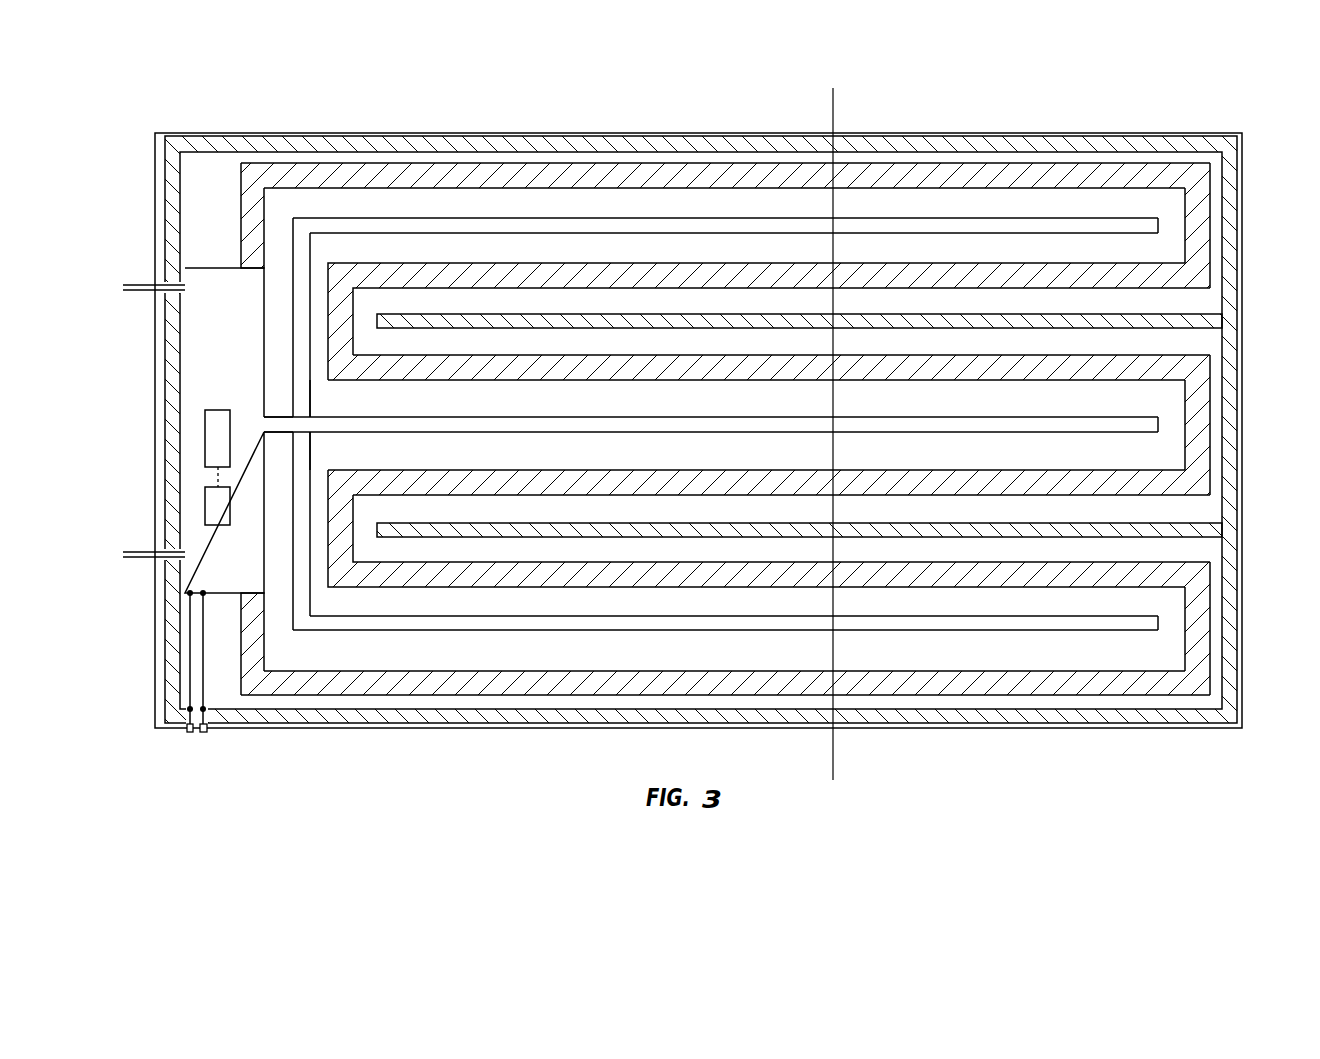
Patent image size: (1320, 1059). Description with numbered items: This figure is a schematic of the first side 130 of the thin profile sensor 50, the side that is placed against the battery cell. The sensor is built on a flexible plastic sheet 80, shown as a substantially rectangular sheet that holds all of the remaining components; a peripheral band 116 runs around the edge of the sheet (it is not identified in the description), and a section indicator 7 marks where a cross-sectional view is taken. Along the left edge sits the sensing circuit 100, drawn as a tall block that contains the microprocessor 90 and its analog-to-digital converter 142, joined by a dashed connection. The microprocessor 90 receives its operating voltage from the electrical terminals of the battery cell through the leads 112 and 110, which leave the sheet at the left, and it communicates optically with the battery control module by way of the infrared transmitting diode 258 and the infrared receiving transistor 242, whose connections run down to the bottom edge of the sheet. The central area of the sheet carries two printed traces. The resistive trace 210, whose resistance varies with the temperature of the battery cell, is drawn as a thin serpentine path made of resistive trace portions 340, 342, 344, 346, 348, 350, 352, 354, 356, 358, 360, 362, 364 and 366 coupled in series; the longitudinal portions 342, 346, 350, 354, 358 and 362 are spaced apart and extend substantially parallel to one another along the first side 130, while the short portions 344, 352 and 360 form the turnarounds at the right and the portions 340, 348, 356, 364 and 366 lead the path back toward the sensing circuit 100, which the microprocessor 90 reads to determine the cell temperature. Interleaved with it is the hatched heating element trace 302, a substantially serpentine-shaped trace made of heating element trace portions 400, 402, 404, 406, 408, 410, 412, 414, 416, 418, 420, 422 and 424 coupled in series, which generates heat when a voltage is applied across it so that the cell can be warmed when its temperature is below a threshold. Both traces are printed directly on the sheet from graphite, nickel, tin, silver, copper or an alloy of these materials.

The thin profile sensor 50 is at (697, 117).
The section line for FIG. 7 is at (866, 83).
The flexible plastic sheet 80 is at (907, 133).
The housing insulating wall 116 is at (1150, 716).
The sensing circuit 100 is at (192, 358).
The microprocessor 90 is at (207, 430).
The analog-to-digital converter 142 is at (207, 500).
The lead 112 is at (140, 287).
The lead 110 is at (140, 556).
The infrared transmitting diode 258 is at (190, 736).
The infrared receiving transistor 242 is at (204, 735).
The heating element trace portion 422 is at (760, 193).
The heating element trace portion 424 is at (250, 206).
The heating element trace portion 420 is at (1185, 200).
The heating element trace portion 416 is at (353, 306).
The heating element trace portion 418 is at (722, 295).
The heating element trace portion 414 is at (788, 388).
The heating element trace portion 412 is at (1185, 397).
The heating element trace portion 410 is at (745, 462).
The heating element trace portion 408 is at (355, 540).
The heating element trace portion 406 is at (848, 595).
The heating element trace portion 404 is at (1185, 598).
The heating element trace portion 402 is at (560, 670).
The heating element trace portion 400 is at (264, 638).
The heating element trace 302 is at (1170, 278).
The resistive trace portion 364 is at (293, 265).
The resistive trace portion 340 is at (268, 443).
The resistive trace portion 366 is at (266, 420).
The resistive trace portion 356 is at (310, 391).
The resistive trace portion 348 is at (310, 441).
The resistive trace portion 362 is at (640, 218).
The resistive trace portion 358 is at (580, 235).
The resistive trace portion 360 is at (1150, 228).
The resistive trace portion 354 is at (692, 410).
The resistive trace portion 350 is at (617, 437).
The resistive trace portion 352 is at (1150, 426).
The resistive trace portion 346 is at (760, 612).
The resistive trace portion 342 is at (388, 632).
The resistive trace portion 344 is at (1150, 629).
The resistive trace 210 is at (468, 630).
The first side 130 is at (998, 657).